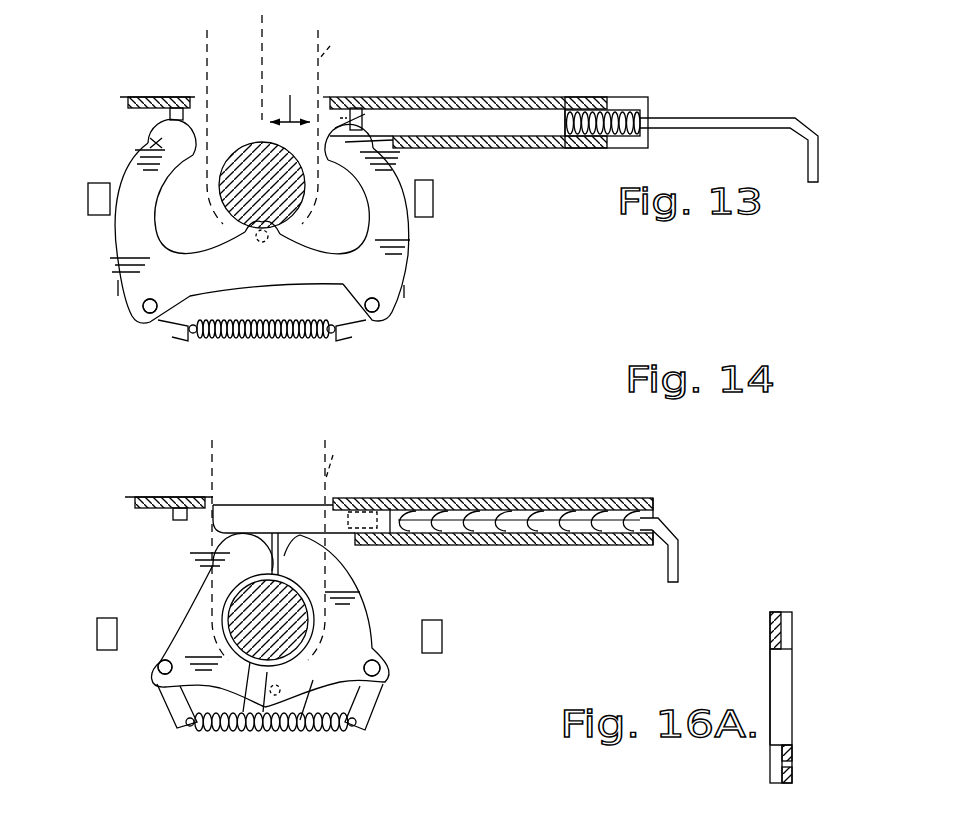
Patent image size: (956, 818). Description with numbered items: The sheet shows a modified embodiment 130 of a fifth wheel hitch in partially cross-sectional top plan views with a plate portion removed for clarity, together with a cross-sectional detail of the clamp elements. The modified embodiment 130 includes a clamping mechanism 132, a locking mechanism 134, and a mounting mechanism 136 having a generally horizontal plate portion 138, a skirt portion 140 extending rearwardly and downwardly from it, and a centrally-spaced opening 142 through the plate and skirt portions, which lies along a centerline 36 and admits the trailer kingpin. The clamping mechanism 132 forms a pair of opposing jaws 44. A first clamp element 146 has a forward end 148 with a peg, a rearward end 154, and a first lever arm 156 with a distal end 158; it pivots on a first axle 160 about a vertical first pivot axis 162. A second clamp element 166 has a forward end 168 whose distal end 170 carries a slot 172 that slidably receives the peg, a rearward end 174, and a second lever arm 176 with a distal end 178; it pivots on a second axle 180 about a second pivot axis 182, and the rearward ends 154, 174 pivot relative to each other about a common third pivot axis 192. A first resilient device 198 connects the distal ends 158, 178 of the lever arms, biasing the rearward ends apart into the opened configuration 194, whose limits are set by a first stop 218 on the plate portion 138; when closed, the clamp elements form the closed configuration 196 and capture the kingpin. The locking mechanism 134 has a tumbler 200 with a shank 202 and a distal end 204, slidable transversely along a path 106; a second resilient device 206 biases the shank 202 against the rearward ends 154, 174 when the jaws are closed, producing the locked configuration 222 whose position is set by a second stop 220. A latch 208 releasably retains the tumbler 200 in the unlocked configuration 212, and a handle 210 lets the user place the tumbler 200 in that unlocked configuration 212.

In FIG. 13, the centerline 36 is at (262, 45).
In FIG. 14, the centerline 36 is at (268, 553).
In FIG. 13, the opposing jaws 44 is at (455, 240).
In FIG. 13, the path 106 is at (290, 95).
In FIG. 13, the modified embodiment 130 is at (695, 65).
In FIG. 14, the modified embodiment 130 is at (648, 462).
In FIG. 16A, the modified embodiment 130 is at (812, 635).
In FIG. 13, the clamping mechanism 132 is at (269, 272).
In FIG. 14, the clamping mechanism 132 is at (287, 661).
In FIG. 13, the locking mechanism 134 is at (570, 96).
In FIG. 14, the locking mechanism 134 is at (453, 494).
In FIG. 13, the mounting mechanism 136 is at (160, 44).
In FIG. 14, the plate portion 138 is at (525, 592).
In FIG. 13, the skirt portion 140 is at (185, 80).
In FIG. 14, the skirt portion 140 is at (169, 502).
In FIG. 13, the centrally-spaced opening 142 is at (345, 39).
In FIG. 14, the centrally-spaced opening 142 is at (349, 454).
In FIG. 13, the first clamp element 146 is at (402, 248).
In FIG. 14, the first clamp element 146 is at (352, 600).
In FIG. 13, the forward end 148 is at (333, 281).
In FIG. 14, the forward end 148 is at (330, 713).
In FIG. 13, the rearward end 154 is at (355, 133).
In FIG. 14, the rearward end 154 is at (312, 548).
In FIG. 13, the first lever arm 156 is at (395, 290).
In FIG. 14, the first lever arm 156 is at (375, 646).
In FIG. 13, the distal end 158 is at (340, 340).
In FIG. 14, the distal end 158 is at (365, 726).
In FIG. 13, the first axle 160 is at (375, 308).
In FIG. 14, the first axle 160 is at (387, 681).
In FIG. 13, the first pivot axis 162 is at (372, 305).
In FIG. 14, the first pivot axis 162 is at (372, 668).
In FIG. 13, the second clamp element 166 is at (112, 238).
In FIG. 14, the second clamp element 166 is at (186, 594).
In FIG. 16A, the second clamp element 166 is at (794, 695).
In FIG. 13, the forward end 168 is at (237, 281).
In FIG. 14, the forward end 168 is at (230, 693).
In FIG. 16A, the forward end 168 is at (772, 776).
In FIG. 16A, the distal end 170 is at (792, 772).
In FIG. 16A, the slot 172 is at (797, 763).
In FIG. 13, the rearward end 174 is at (147, 142).
In FIG. 14, the rearward end 174 is at (212, 558).
In FIG. 16A, the rearward end 174 is at (775, 611).
In FIG. 13, the second lever arm 176 is at (130, 288).
In FIG. 14, the second lever arm 176 is at (160, 638).
In FIG. 13, the distal end 178 is at (185, 340).
In FIG. 14, the distal end 178 is at (173, 728).
In FIG. 13, the second axle 180 is at (143, 313).
In FIG. 14, the second axle 180 is at (158, 680).
In FIG. 13, the second pivot axis 182 is at (150, 306).
In FIG. 14, the second pivot axis 182 is at (165, 667).
In FIG. 13, the third pivot axis 192 is at (265, 240).
In FIG. 14, the third pivot axis 192 is at (262, 710).
In FIG. 13, the opened configuration 194 is at (488, 290).
In FIG. 14, the closed configuration 196 is at (542, 627).
In FIG. 13, the first resilient device 198 is at (287, 343).
In FIG. 14, the first resilient device 198 is at (287, 733).
In FIG. 13, the tumbler 200 is at (495, 112).
In FIG. 14, the tumbler 200 is at (238, 510).
In FIG. 13, the shank 202 is at (450, 112).
In FIG. 14, the shank 202 is at (289, 510).
In FIG. 13, the distal end 204 is at (375, 112).
In FIG. 14, the distal end 204 is at (200, 505).
In FIG. 13, the second resilient device 206 is at (620, 115).
In FIG. 14, the second resilient device 206 is at (588, 510).
In FIG. 13, the latch 208 is at (349, 100).
In FIG. 14, the latch 208 is at (378, 500).
In FIG. 13, the handle 210 is at (775, 117).
In FIG. 14, the handle 210 is at (683, 547).
In FIG. 13, the unlocked configuration 212 is at (115, 70).
In FIG. 13, the first stop 218 is at (85, 192).
In FIG. 14, the first stop 218 is at (97, 633).
In FIG. 13, the second stop 220 is at (170, 113).
In FIG. 14, the second stop 220 is at (175, 516).
In FIG. 14, the locked configuration 222 is at (105, 500).